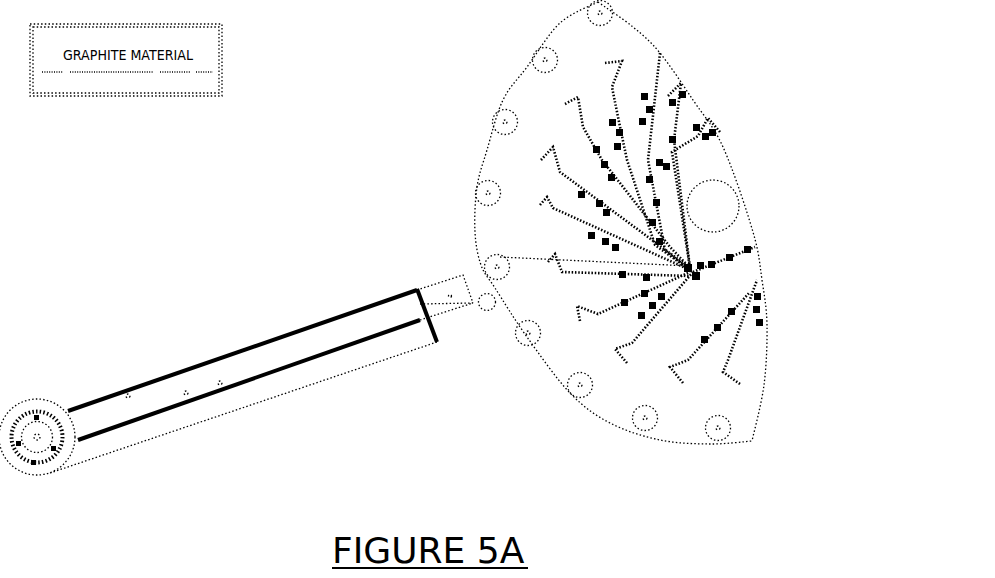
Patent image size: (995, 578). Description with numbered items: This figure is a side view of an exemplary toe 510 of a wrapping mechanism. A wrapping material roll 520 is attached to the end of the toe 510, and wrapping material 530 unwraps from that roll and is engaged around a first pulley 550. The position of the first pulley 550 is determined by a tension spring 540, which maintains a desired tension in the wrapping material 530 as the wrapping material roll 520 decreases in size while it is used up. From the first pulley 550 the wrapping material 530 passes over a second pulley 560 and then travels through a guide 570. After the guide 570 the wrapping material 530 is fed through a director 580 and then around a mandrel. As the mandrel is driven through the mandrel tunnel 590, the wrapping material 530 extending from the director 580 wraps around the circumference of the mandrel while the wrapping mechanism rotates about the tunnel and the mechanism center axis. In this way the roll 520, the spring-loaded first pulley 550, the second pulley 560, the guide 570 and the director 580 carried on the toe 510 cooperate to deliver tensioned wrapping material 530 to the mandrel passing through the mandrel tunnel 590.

The toe 510 is at (197, 368).
The wrapping material roll 520 is at (43, 399).
The wrapping material 530 is at (178, 428).
The tension spring 540 is at (340, 352).
The first pulley 550 is at (492, 311).
The second pulley 560 is at (492, 256).
The guide 570 is at (565, 268).
The director 580 is at (697, 268).
The mandrel tunnel 590 is at (730, 182).